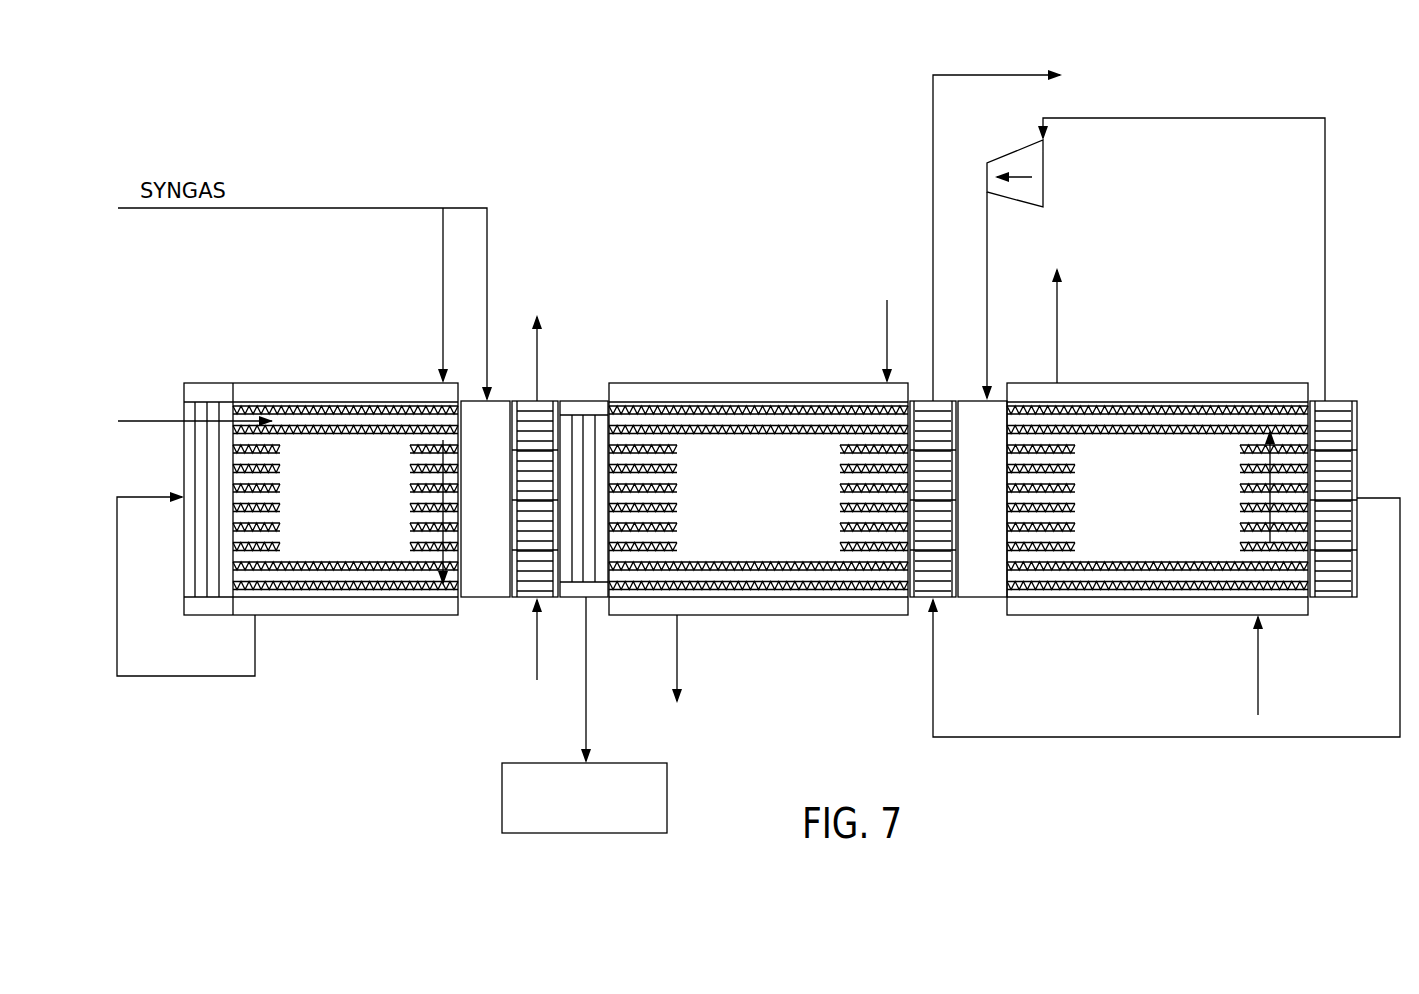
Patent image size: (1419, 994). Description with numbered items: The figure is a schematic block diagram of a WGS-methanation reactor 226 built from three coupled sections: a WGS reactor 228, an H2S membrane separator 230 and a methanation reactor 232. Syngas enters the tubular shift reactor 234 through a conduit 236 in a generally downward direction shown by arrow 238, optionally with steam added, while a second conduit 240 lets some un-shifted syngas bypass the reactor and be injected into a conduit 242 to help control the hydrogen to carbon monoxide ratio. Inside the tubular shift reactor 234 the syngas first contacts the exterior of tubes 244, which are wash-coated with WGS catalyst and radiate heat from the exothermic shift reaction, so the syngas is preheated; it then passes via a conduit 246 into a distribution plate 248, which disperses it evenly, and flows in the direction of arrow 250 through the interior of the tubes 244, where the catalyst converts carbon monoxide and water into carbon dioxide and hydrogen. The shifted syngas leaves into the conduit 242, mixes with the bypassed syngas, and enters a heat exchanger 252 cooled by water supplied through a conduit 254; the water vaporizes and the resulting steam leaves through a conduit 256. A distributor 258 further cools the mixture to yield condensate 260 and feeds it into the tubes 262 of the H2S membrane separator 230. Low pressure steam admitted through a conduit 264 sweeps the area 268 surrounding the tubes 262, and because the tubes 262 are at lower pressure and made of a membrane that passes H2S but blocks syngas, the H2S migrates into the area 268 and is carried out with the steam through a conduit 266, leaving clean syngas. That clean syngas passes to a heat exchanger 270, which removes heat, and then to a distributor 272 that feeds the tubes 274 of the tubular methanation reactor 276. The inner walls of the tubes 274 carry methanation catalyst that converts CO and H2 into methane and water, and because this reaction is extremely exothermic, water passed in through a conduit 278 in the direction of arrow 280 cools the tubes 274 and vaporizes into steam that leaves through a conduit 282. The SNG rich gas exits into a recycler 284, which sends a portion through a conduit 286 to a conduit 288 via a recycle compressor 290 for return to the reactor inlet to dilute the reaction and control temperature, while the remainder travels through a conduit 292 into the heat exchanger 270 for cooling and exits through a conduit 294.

The WGS-methanation reactor 226 is at (640, 60).
The WGS reactor 228 is at (300, 312).
The H2S membrane separator 230 is at (781, 383).
The methanation reactor 232 is at (1210, 275).
The tubular shift reactor 234 is at (303, 383).
The conduit 236 is at (443, 265).
The arrow 238 is at (437, 560).
The second conduit 240 is at (487, 238).
The conduit 242 is at (468, 598).
The tubes 244 is at (262, 552).
The conduit 246 is at (192, 676).
The distribution plate 248 is at (207, 383).
The arrow 250 is at (167, 420).
The heat exchanger 252 is at (547, 401).
The conduit 254 is at (538, 670).
The conduit 256 is at (537, 325).
The distributor 258 is at (583, 401).
The condensate 260 is at (667, 778).
The tubes 262 is at (738, 512).
The conduit 264 is at (883, 343).
The conduit 266 is at (678, 672).
The area 268 is at (672, 420).
The heat exchanger 270 is at (917, 601).
The distributor 272 is at (988, 598).
The tubes 274 is at (1117, 593).
The tubular methanation reactor 276 is at (1153, 383).
The conduit 278 is at (1258, 674).
The arrow 280 is at (1275, 452).
The conduit 282 is at (1057, 325).
The recycler 284 is at (1357, 413).
The conduit 286 is at (1185, 118).
The conduit 288 is at (987, 262).
The recycle compressor 290 is at (1043, 165).
The conduit 292 is at (1062, 737).
The conduit 294 is at (943, 75).